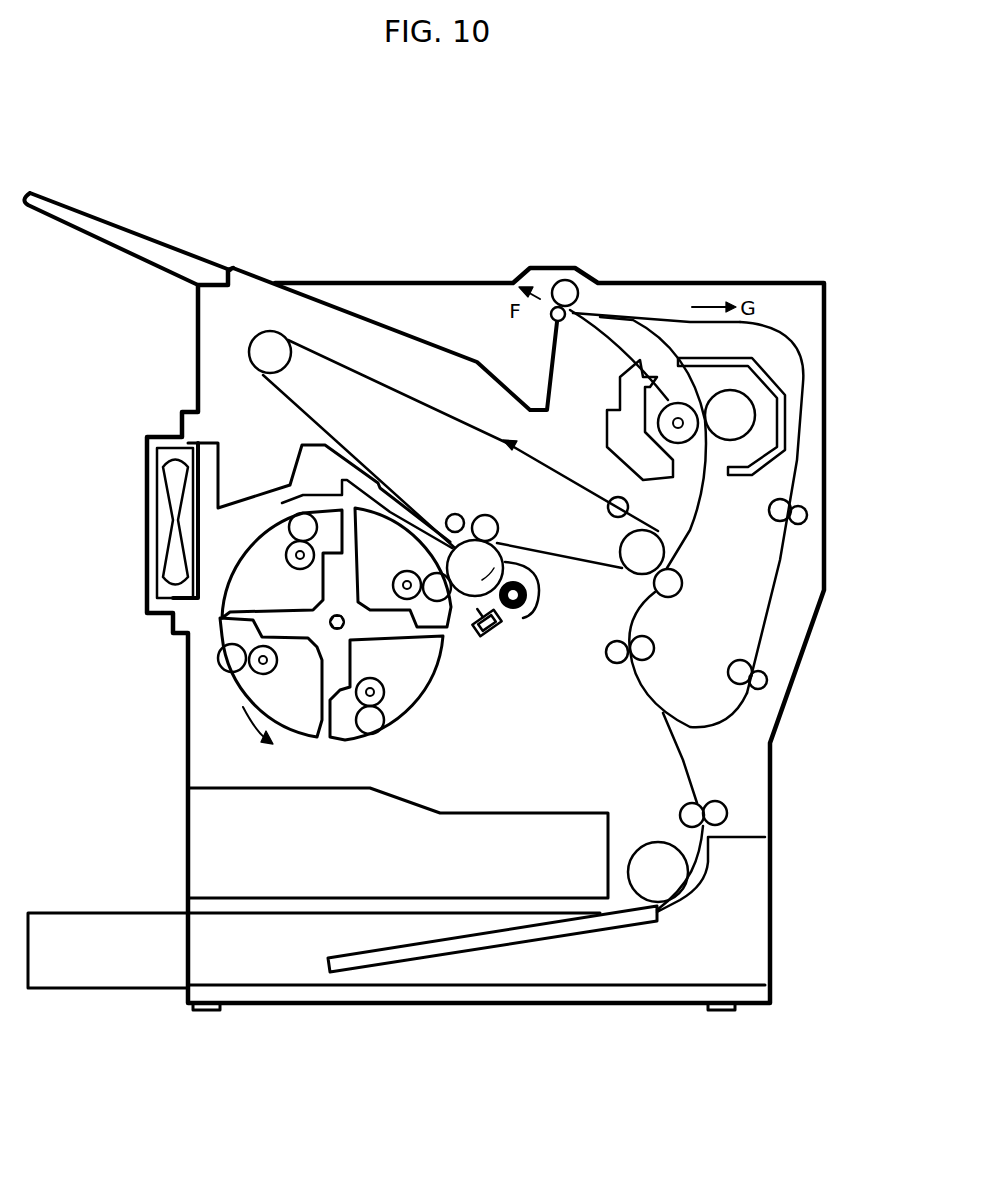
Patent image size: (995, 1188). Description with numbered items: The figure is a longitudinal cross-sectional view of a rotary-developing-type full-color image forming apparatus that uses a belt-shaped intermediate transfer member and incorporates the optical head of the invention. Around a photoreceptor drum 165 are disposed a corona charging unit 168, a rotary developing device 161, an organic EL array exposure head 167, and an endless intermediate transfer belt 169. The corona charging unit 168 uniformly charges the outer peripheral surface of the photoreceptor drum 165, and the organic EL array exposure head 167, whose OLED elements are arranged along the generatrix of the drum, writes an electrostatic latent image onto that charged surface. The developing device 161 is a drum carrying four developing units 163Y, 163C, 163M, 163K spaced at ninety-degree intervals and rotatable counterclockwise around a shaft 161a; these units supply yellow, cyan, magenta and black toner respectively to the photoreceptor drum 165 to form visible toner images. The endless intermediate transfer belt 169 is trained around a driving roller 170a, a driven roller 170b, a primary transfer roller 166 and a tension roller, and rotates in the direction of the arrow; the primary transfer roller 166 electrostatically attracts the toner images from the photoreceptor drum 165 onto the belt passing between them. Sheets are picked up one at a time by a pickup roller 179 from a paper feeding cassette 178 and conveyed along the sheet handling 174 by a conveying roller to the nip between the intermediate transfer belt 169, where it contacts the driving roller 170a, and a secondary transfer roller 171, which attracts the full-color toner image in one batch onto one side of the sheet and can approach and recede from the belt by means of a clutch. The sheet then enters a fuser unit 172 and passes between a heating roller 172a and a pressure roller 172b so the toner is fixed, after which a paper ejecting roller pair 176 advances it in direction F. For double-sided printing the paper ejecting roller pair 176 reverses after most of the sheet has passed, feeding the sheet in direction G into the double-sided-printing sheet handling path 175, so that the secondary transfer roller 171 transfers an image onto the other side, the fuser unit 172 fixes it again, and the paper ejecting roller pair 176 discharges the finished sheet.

The rotary developing device 161 is at (225, 694).
The shaft 161a is at (330, 622).
The developing unit 163K is at (237, 600).
The developing unit 163Y is at (385, 530).
The developing unit 163C is at (410, 683).
The developing unit 163M is at (307, 720).
The photoreceptor drum 165 is at (500, 560).
The primary transfer roller 166 is at (493, 512).
The organic EL array exposure head 167 is at (487, 630).
The corona charging unit 168 is at (532, 598).
The endless intermediate transfer belt 169 is at (352, 362).
The driving roller 170a is at (660, 552).
The driven roller 170b is at (260, 348).
The secondary transfer roller 171 is at (668, 583).
The fuser unit 172 is at (603, 397).
The heating roller 172a is at (757, 413).
The pressure roller 172b is at (712, 378).
The sheet handling 174 is at (620, 313).
The double-sided-printing sheet handling path 175 is at (802, 455).
The paper ejecting roller pair 176 is at (573, 283).
The paper feeding cassette 178 is at (607, 932).
The pickup roller 179 is at (677, 885).